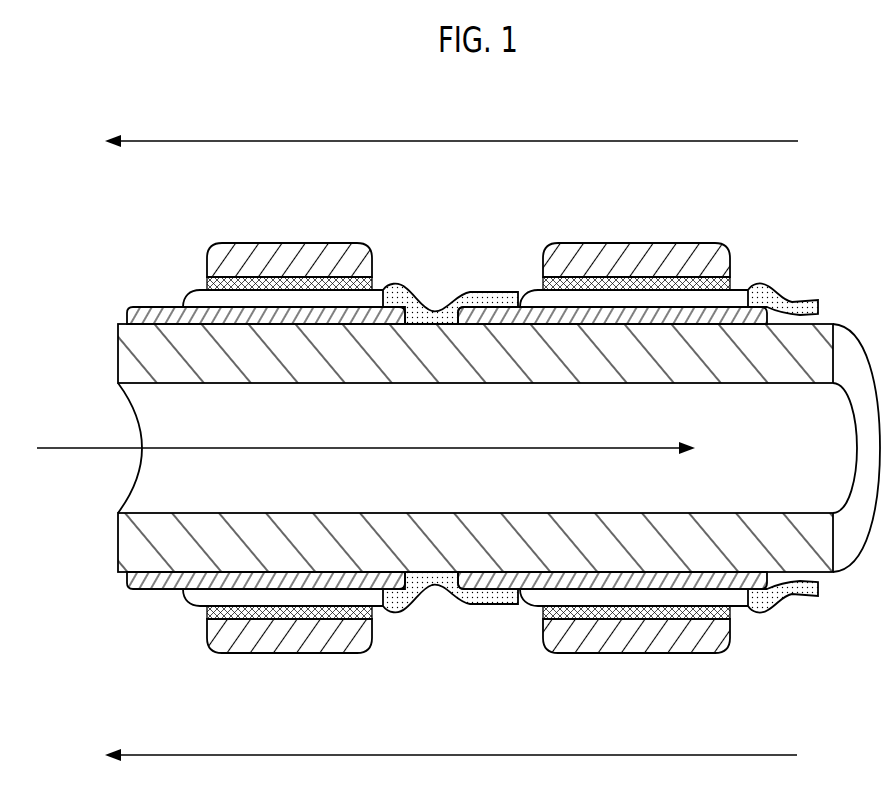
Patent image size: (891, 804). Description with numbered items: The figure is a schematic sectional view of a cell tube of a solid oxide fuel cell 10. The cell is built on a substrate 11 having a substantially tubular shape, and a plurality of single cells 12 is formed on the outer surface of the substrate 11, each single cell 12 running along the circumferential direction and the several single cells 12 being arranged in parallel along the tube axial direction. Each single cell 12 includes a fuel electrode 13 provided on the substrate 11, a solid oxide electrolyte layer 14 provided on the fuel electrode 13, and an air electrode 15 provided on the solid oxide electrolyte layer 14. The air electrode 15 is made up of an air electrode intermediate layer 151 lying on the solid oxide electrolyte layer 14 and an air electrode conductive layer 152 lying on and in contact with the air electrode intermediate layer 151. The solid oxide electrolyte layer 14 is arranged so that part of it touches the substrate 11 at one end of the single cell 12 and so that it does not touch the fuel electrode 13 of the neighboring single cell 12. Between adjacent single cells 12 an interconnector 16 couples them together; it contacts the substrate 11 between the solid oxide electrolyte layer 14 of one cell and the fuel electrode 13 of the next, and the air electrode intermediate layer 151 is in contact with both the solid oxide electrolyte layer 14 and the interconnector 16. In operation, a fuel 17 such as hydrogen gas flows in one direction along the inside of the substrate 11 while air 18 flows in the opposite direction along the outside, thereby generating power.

The solid oxide fuel cell 10 is at (829, 295).
The substrate 11 is at (748, 370).
The single cell 12 is at (281, 190).
The fuel electrode 13 is at (157, 311).
The solid oxide electrolyte layer 14 is at (194, 303).
The air electrode 15 is at (461, 448).
The air electrode intermediate layer 151 is at (263, 284).
The air electrode conductive layer 152 is at (228, 263).
The interconnector 16 is at (495, 299).
The fuel 17 is at (82, 446).
The air 18 is at (492, 139).